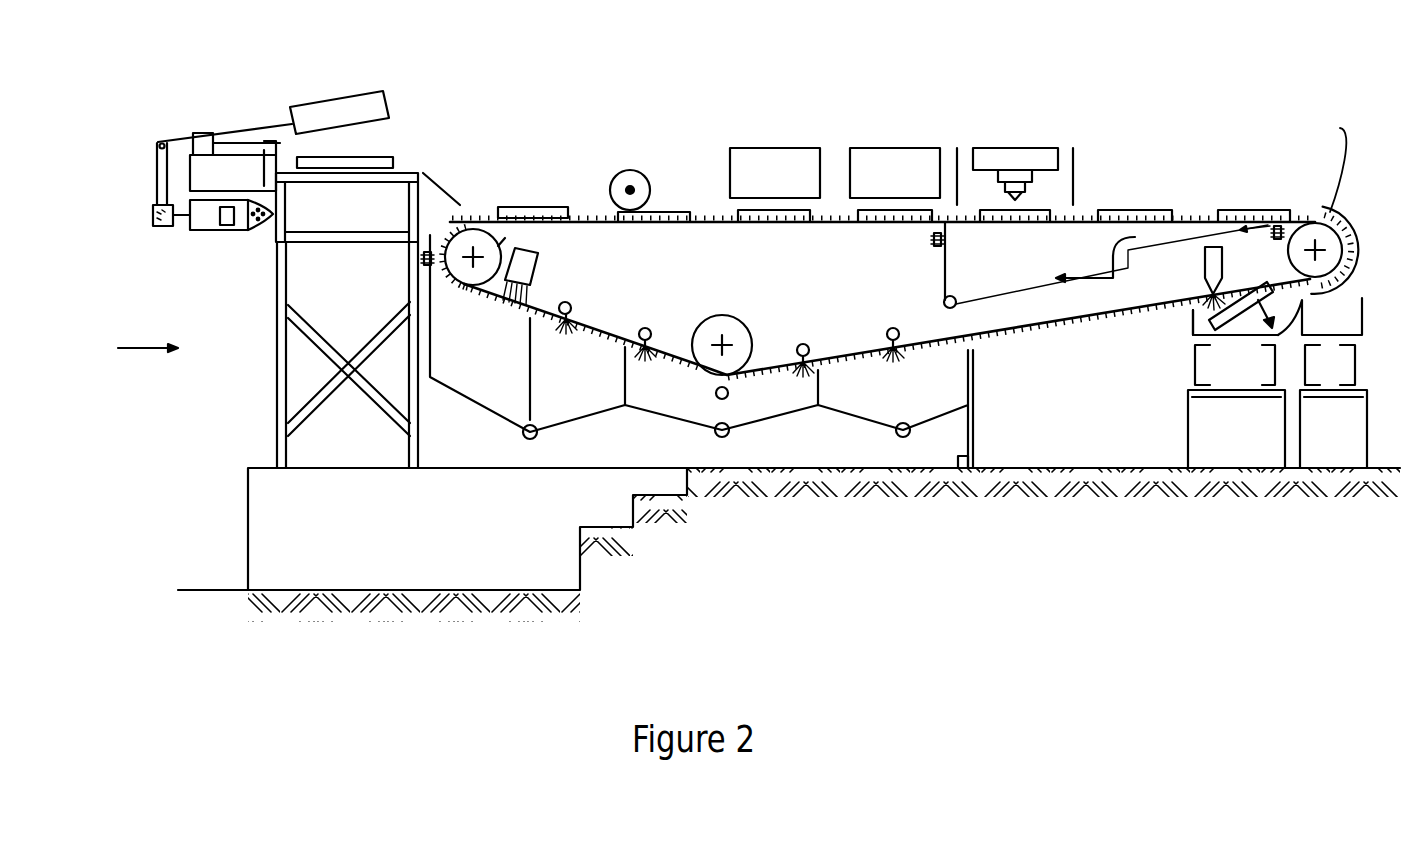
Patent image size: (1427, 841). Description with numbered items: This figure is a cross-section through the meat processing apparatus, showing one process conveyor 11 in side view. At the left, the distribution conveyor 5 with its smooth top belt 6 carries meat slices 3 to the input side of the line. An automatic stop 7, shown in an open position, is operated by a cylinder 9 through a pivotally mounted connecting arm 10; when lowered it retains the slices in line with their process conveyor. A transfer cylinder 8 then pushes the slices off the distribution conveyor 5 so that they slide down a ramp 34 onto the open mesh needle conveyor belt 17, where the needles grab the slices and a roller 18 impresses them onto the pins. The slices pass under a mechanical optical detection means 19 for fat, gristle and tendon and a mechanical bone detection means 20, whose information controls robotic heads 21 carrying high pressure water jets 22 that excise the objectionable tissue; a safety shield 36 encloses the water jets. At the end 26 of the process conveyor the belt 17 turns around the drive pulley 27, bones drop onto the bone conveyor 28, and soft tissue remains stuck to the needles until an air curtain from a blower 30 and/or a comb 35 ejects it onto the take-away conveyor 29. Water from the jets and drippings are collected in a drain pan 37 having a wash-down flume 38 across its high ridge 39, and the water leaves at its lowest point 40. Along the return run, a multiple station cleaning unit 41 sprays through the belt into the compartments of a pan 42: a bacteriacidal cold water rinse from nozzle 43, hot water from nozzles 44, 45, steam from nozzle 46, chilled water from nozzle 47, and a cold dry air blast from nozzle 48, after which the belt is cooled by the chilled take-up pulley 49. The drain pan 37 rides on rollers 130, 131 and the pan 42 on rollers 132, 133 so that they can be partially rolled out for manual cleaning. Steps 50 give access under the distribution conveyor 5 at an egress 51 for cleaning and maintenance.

The meat slices 3 is at (392, 157).
The distribution conveyor 5 is at (276, 264).
The top belt 6 is at (419, 173).
The automatic stop 7 is at (322, 100).
The transfer cylinder 8 is at (197, 133).
The cylinder 9 is at (193, 232).
The connecting arm 10 is at (257, 127).
The process conveyor 11 is at (1302, 71).
The conveyor belt 17 is at (702, 222).
The roller 18 is at (617, 176).
The mechanical optical detection means 19 is at (775, 148).
The mechanical bone detection means 20 is at (855, 148).
The robotic head 21 is at (993, 148).
The water jet 22 is at (1017, 201).
The end of process conveyor 26 is at (1348, 222).
The drive pulley 27 is at (1370, 232).
The bone conveyor 28 is at (1362, 333).
The take-away conveyor 29 is at (1196, 367).
The blower 30 is at (1205, 258).
The ramp 34 is at (447, 190).
The comb 35 is at (1193, 316).
The safety shield 36 is at (957, 148).
The drain pan 37 is at (1150, 220).
The wash-down flume 38 is at (1270, 221).
The high ridge 39 is at (1278, 221).
The lowest point 40 is at (944, 304).
The multiple station cleaning unit 41 is at (757, 318).
The pan 42 is at (688, 427).
The nozzle 43 is at (892, 326).
The nozzle 44 is at (808, 346).
The nozzle 45 is at (645, 328).
The nozzle 46 is at (727, 394).
The nozzle 47 is at (571, 304).
The nozzle 48 is at (540, 258).
The take-up pulley 49 is at (505, 238).
The steps 50 is at (580, 527).
The egress 51 is at (161, 347).
The roller 130 is at (1273, 233).
The roller 131 is at (930, 240).
The roller 132 is at (960, 467).
The roller 133 is at (425, 259).